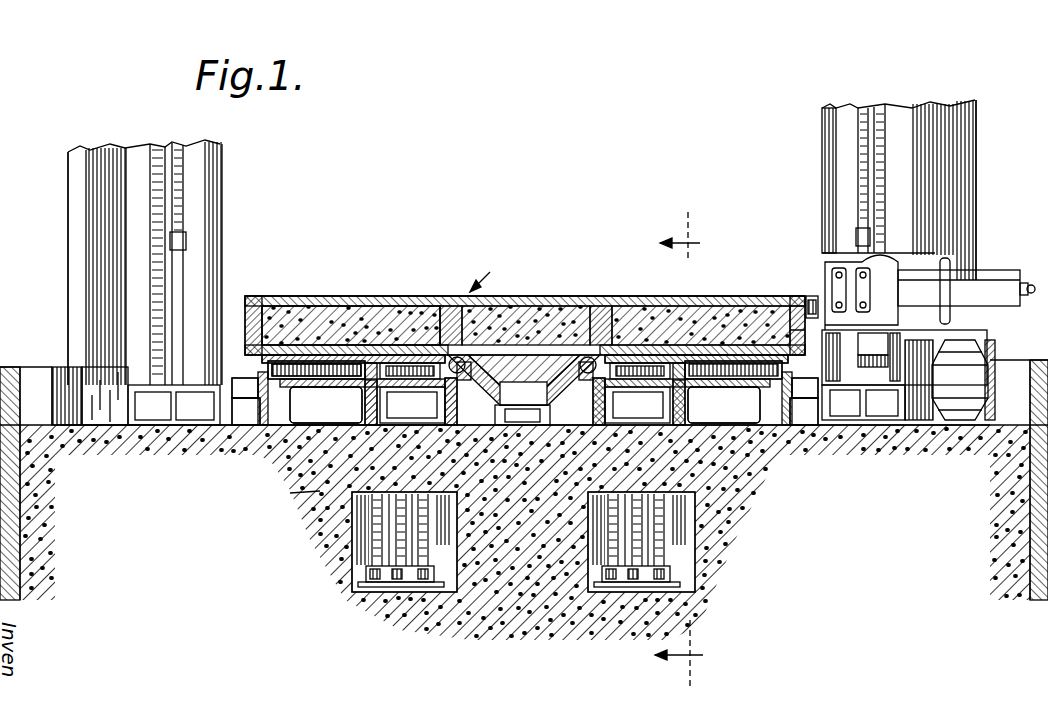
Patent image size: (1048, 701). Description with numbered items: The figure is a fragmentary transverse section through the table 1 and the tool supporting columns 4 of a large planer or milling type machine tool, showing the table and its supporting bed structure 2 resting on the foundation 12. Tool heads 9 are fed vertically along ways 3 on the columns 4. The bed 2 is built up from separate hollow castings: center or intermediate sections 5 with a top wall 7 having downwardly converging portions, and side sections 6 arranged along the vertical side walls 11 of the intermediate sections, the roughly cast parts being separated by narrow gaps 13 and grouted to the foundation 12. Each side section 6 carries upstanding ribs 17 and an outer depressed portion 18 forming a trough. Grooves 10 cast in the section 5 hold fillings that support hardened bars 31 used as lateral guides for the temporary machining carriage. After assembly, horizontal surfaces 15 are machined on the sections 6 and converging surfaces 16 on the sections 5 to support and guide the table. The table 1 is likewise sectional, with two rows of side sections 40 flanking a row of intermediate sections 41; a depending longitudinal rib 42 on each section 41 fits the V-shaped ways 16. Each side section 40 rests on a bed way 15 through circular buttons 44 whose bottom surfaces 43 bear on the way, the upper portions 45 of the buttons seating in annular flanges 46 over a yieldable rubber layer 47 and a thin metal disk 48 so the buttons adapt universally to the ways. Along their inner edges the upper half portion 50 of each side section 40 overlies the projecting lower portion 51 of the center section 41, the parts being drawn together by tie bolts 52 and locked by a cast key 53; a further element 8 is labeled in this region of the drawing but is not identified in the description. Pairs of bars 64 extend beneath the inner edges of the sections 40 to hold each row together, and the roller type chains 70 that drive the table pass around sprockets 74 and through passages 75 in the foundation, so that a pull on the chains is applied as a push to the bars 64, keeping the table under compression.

The table 1 is at (486, 275).
The bed structure 2 is at (524, 500).
The ways 3 is at (190, 140).
The columns 4 is at (72, 258).
The center or intermediate sections 5 is at (525, 436).
The side sections 6 is at (467, 437).
The top wall 7 is at (524, 381).
The bearing block 8 is at (705, 390).
The heads 9 is at (826, 258).
The grooves 10 is at (522, 355).
The side walls 11 is at (525, 415).
The foundation 12 is at (294, 500).
The gaps 13 is at (520, 412).
The horizontal surfaces 15 is at (525, 405).
The converging surfaces 16 is at (513, 386).
The upstanding ribs 17 is at (786, 380).
The depressed portion 18 is at (521, 424).
The hardened bars 31 is at (530, 384).
The side sections 40 is at (318, 296).
The intermediate sections 41 is at (525, 282).
The depending longitudinal rib 42 is at (522, 403).
The bottom surfaces 43 is at (495, 400).
The buttons 44 is at (300, 379).
The upper portions 45 is at (351, 325).
The annular flanges 46 is at (262, 358).
The layer 47 is at (493, 325).
The metal disk 48 is at (270, 367).
The upper half portion 50 is at (455, 296).
The lower portion 51 is at (601, 325).
The tie bolts 52 is at (696, 309).
The key 53 is at (450, 312).
The bars 64 is at (425, 390).
The roller type chains 70 is at (400, 582).
The sprockets 74 is at (395, 493).
The passages 75 is at (457, 548).